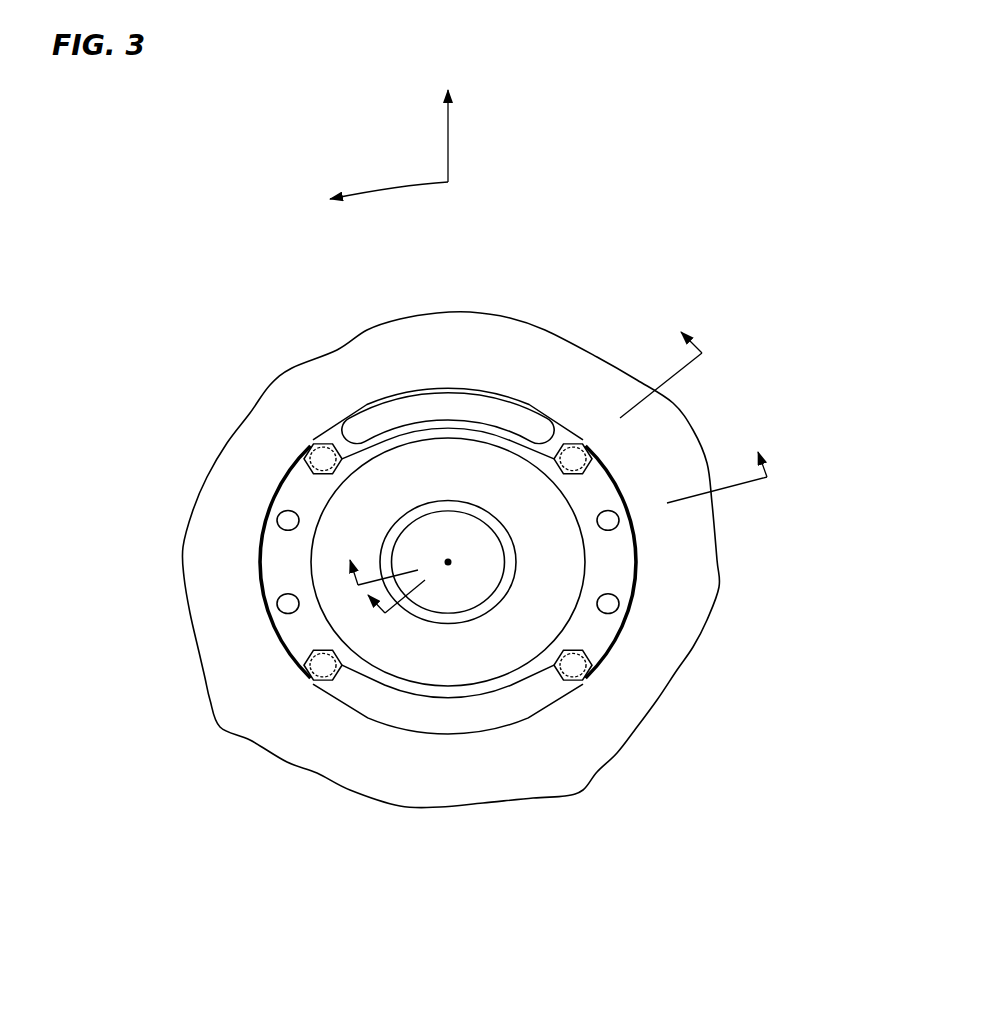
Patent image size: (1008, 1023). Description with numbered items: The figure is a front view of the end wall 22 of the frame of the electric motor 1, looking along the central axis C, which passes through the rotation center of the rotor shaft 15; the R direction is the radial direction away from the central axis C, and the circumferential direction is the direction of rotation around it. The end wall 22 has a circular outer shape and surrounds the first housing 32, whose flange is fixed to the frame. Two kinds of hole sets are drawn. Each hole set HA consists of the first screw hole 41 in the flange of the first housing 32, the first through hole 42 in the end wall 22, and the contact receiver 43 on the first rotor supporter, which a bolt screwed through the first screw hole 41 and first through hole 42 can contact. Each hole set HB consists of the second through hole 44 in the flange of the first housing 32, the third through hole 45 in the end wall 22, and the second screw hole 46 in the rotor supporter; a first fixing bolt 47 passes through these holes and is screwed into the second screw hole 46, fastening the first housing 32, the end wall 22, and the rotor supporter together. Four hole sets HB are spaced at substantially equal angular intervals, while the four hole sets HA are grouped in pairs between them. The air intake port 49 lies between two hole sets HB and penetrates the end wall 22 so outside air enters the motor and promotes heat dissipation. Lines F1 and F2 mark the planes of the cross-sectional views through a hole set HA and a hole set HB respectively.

The electric motor 1 is at (748, 278).
The rotor shaft 15 is at (450, 603).
The end wall 22 is at (415, 317).
The first housing 32 is at (473, 690).
The first fixing bolt 47 is at (322, 443).
The air intake port 49 is at (466, 401).
The first screw hole 41 is at (288, 520).
The first through hole 42 is at (608, 520).
The contact receiver 43 is at (288, 604).
The second through hole 44 is at (323, 459).
The third through hole 45 is at (573, 459).
The second screw hole 46 is at (323, 665).
The hole set HA is at (478, 573).
The hole set HB is at (470, 569).
The central axis C is at (453, 562).
The line F1- F1 is at (563, 526).
The line F2- F2 is at (552, 491).
The R direction R is at (447, 117).